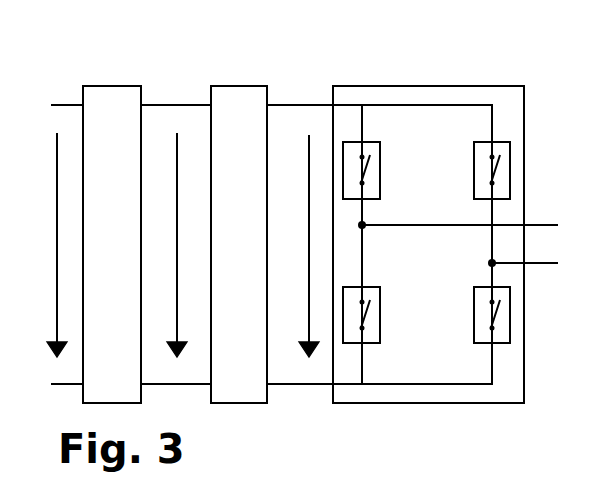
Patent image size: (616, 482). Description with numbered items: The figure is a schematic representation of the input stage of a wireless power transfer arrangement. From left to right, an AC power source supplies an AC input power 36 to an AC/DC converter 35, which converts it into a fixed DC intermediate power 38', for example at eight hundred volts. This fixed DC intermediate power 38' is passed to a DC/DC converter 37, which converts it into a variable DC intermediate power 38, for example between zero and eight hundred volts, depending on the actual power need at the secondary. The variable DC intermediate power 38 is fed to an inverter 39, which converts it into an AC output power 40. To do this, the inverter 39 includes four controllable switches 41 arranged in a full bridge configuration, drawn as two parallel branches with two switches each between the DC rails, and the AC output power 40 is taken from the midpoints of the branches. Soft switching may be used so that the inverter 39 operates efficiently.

The AC/DC converter 35 is at (112, 244).
The AC input power 36 is at (56, 233).
The DC/DC converter 37 is at (239, 244).
The variable DC intermediate power 38 is at (297, 202).
The fixed DC intermediate power 38' is at (165, 202).
The inverter 39 is at (418, 85).
The AC output power 40 is at (470, 244).
The controllable switches 41 is at (474, 165).